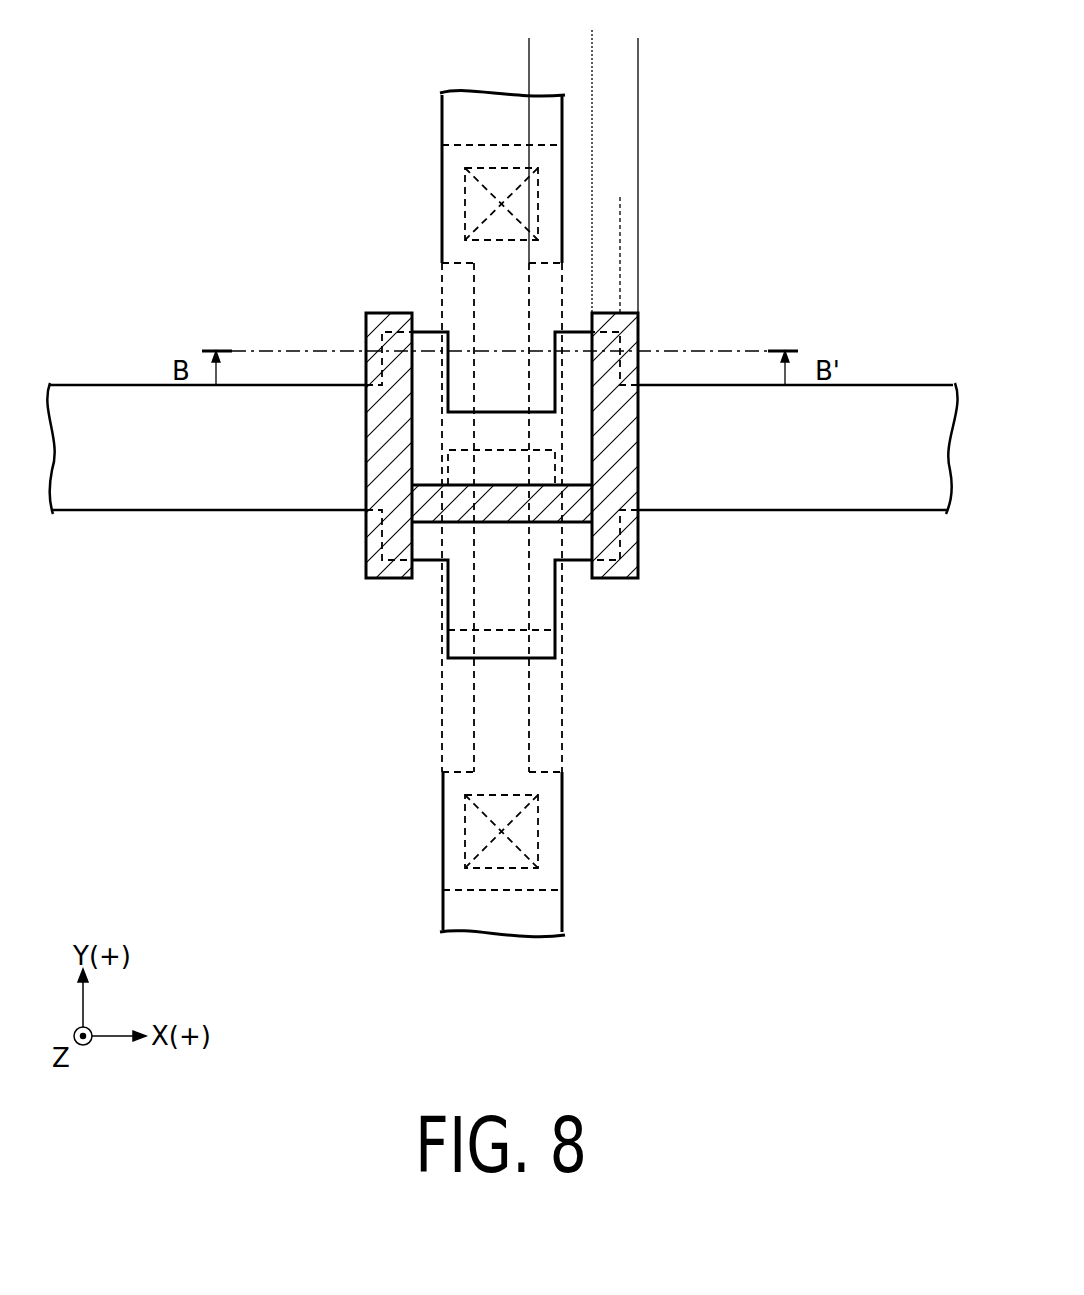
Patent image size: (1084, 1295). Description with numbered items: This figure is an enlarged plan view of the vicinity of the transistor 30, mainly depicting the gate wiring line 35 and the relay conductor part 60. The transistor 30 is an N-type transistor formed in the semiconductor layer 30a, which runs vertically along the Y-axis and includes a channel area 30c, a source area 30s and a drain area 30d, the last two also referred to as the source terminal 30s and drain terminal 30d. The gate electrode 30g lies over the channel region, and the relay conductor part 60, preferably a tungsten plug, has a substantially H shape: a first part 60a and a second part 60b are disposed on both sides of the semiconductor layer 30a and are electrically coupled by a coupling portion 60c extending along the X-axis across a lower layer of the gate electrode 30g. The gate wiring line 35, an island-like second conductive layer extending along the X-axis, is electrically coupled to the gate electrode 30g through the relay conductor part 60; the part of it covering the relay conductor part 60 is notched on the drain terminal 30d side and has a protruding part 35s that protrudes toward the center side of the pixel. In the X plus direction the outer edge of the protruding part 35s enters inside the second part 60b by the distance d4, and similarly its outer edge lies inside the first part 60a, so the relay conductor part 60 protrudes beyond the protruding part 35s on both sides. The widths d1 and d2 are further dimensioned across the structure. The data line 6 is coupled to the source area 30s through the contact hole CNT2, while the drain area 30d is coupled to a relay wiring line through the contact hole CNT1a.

The data line 6 is at (468, 92).
The contact hole CNT1a is at (470, 190).
The contact hole CNT2 is at (470, 848).
The transistor 30 is at (355, 507).
The semiconductor layer 30a is at (493, 287).
The channel area 30c is at (500, 589).
The drain area 30d is at (450, 224).
The gate electrode 30g is at (463, 630).
The source area 30s is at (452, 793).
The gate wiring line 35 is at (927, 392).
The protruding part 35s is at (422, 342).
The relay conductor part 60 is at (504, 438).
The first part 60a is at (372, 322).
The second part 60b is at (633, 322).
The coupling portion 60c is at (497, 507).
The distance d1 is at (592, 48).
The distance d2 is at (638, 48).
The distance d4 is at (592, 203).